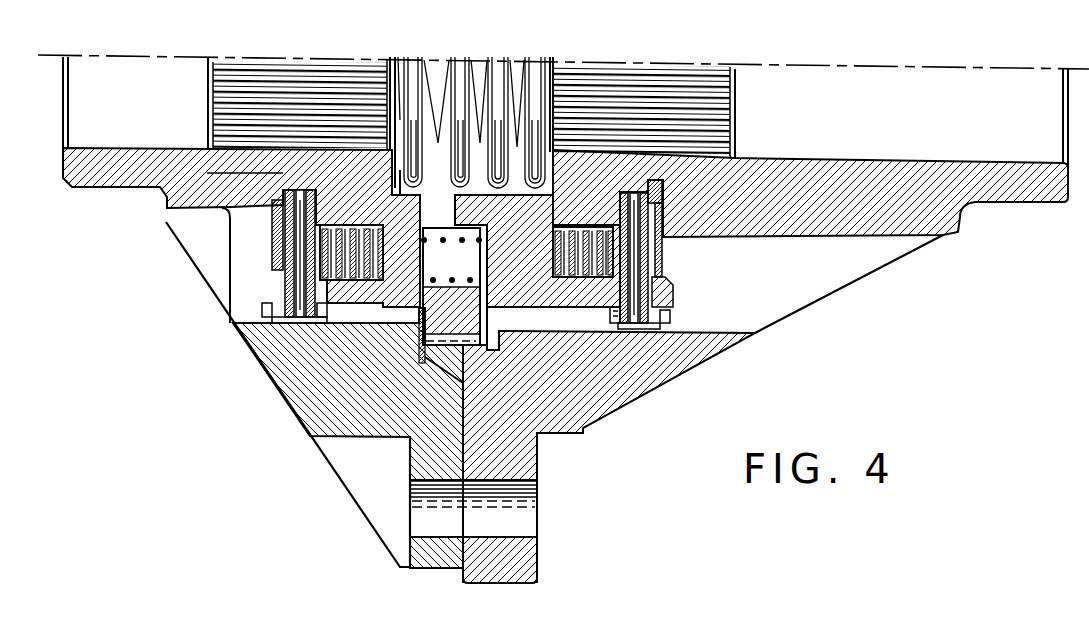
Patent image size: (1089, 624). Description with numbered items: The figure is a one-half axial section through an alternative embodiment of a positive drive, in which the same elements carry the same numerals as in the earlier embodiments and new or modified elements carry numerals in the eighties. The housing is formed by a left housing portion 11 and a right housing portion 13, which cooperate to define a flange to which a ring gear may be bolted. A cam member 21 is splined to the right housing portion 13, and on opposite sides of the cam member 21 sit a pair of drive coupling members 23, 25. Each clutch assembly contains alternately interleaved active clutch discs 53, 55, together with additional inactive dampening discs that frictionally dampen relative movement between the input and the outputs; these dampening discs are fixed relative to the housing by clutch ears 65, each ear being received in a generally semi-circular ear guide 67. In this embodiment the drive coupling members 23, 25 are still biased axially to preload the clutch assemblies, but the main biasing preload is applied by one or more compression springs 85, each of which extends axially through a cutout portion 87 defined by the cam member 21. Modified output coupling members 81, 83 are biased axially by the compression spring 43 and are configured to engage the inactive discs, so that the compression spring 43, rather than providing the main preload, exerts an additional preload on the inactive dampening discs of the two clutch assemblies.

The left housing portion 11 is at (108, 172).
The right housing portion 13 is at (1000, 185).
The cam member 21 is at (482, 317).
The drive coupling member 23 is at (388, 303).
The drive coupling member 25 is at (535, 292).
The compression spring 43 is at (492, 76).
The clutch discs 53 is at (593, 230).
The clutch discs 55 is at (545, 270).
The clutch ears 65 is at (671, 300).
The ear guide 67 is at (668, 312).
The output coupling member 81 is at (207, 167).
The output coupling member 83 is at (735, 172).
The compression spring 85 is at (458, 285).
The cutout portion 87 is at (440, 254).